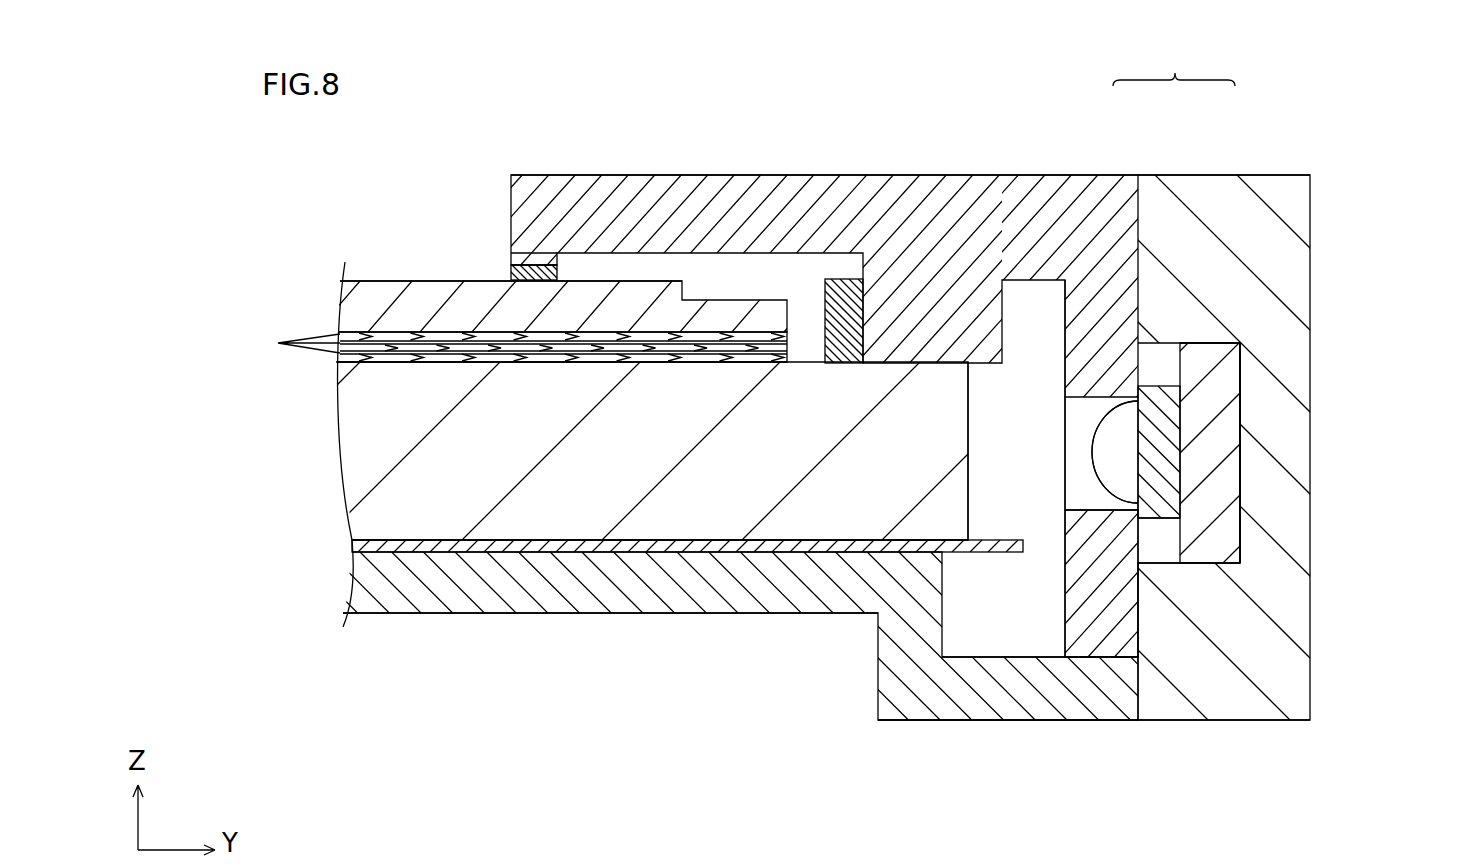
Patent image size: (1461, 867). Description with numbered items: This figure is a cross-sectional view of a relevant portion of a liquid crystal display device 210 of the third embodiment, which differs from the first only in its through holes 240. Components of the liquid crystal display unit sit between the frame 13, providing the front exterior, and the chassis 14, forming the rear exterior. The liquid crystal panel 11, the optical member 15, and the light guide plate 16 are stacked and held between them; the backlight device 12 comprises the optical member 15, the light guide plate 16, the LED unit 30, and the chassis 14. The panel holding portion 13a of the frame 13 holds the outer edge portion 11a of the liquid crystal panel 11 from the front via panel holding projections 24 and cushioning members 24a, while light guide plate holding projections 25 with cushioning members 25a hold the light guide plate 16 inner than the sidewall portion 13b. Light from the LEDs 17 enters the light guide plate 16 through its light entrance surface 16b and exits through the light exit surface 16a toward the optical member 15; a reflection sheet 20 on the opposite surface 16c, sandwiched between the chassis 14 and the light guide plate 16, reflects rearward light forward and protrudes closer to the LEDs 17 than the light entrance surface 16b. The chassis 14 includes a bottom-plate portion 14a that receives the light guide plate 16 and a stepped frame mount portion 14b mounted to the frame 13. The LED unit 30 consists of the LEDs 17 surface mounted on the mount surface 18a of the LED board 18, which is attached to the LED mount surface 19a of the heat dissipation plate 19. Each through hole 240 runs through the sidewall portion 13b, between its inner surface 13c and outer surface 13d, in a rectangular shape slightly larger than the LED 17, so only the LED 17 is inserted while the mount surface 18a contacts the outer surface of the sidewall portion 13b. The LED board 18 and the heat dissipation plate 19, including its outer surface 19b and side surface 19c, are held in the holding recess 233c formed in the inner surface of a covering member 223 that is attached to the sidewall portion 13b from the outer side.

The liquid crystal display device 210 is at (470, 132).
The backlight device 12 is at (537, 741).
The frame 13 is at (980, 228).
The panel holding portion 13a is at (677, 225).
The sidewall portion 13b is at (1123, 620).
The inner surface of sidewall portion 13c is at (1065, 627).
The outer surface of sidewall portion 13d is at (1140, 638).
The chassis 14 is at (388, 585).
The bottom-plate portion 14a is at (497, 596).
The frame mount portion 14b is at (970, 700).
The optical member 15 is at (278, 343).
The light guide plate 16 is at (370, 420).
The light exit surface 16a is at (552, 362).
The light entrance surface 16b is at (880, 620).
The opposite surface 16c is at (680, 546).
The LED 17 is at (1112, 450).
The LED board 18 is at (1153, 437).
The mount surface 18a is at (1135, 515).
The heat dissipation plate 19 is at (1218, 385).
The LED mount surface 19a is at (1162, 567).
The outer surface of heat dissipation plate 19b is at (1243, 362).
The side surface of heat dissipation plate 19c is at (1203, 565).
The reflection sheet 20 is at (352, 544).
The panel holding projection 24 is at (532, 262).
The cushioning member 24a is at (512, 273).
The light guide plate holding projection 25 is at (890, 320).
The cushioning member 25a is at (840, 283).
The LED unit 30 is at (1174, 62).
The liquid crystal panel 11 is at (350, 314).
The upper surface of cover plate 11a is at (404, 280).
The support block 223 is at (1283, 278).
The holding recess 233c is at (1233, 430).
The through hole 240 is at (1112, 508).